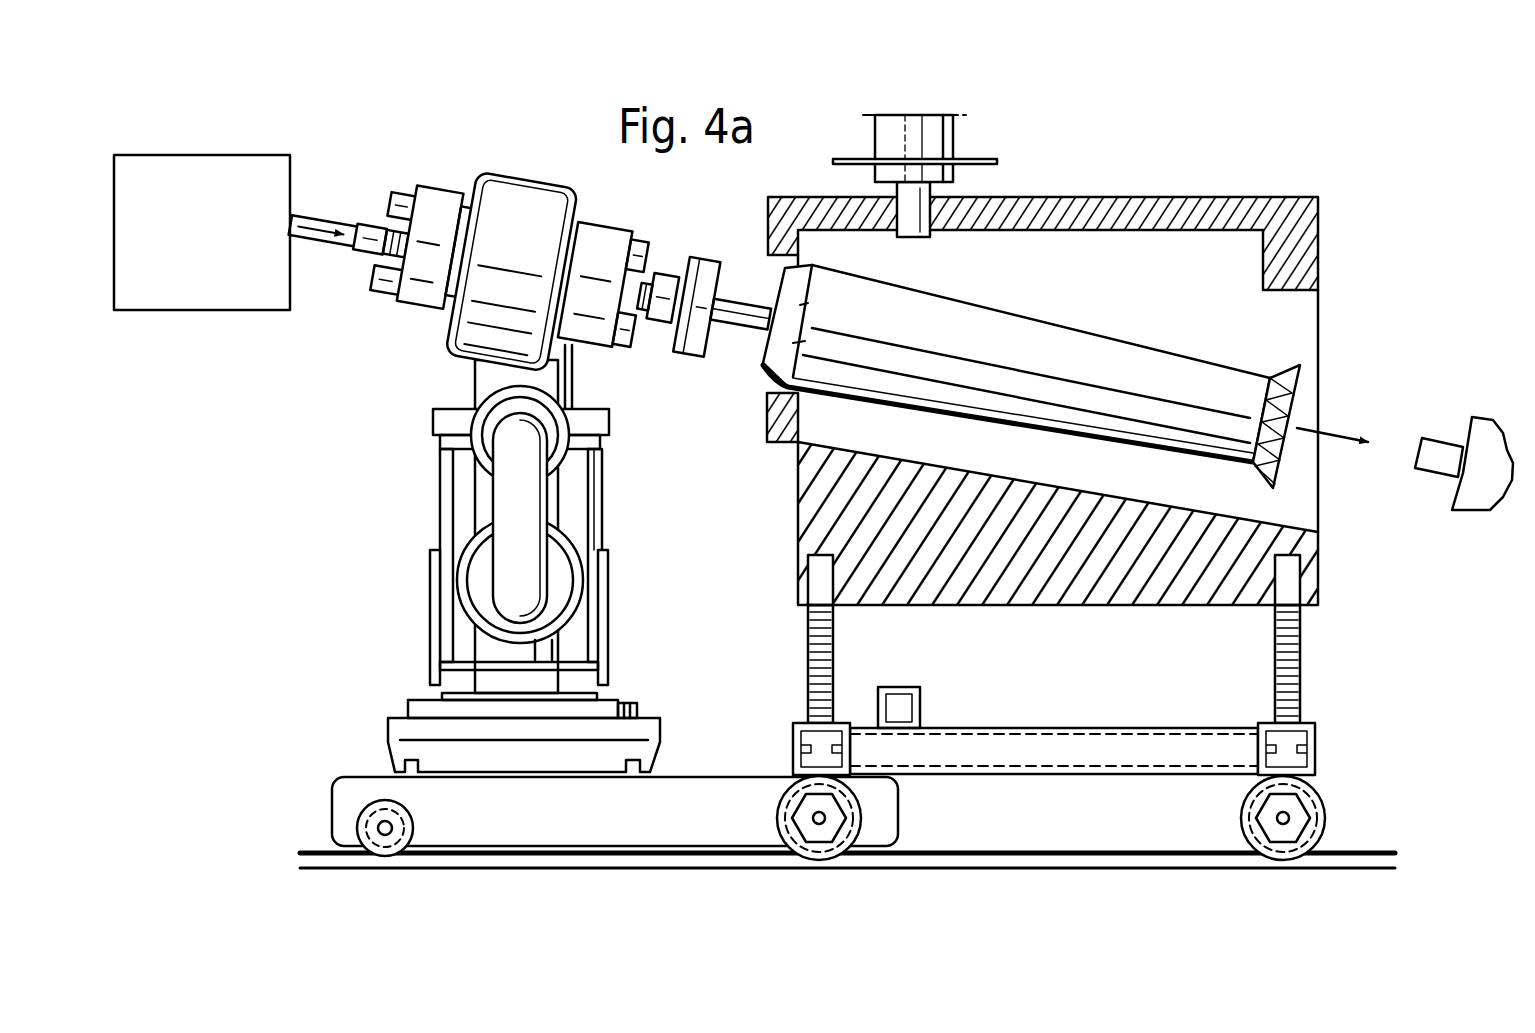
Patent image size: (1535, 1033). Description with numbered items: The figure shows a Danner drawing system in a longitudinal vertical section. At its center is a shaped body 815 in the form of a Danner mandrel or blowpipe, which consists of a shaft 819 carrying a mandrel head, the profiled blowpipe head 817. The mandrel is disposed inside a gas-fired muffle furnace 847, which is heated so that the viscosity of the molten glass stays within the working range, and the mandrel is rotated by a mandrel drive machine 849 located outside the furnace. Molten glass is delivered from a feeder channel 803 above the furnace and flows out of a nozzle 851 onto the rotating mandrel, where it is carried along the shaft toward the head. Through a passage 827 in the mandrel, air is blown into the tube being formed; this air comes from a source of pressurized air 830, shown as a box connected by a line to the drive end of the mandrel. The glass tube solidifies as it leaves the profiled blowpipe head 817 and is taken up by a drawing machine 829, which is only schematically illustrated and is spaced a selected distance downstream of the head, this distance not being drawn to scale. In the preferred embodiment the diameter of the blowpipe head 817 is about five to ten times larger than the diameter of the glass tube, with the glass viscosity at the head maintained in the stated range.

The source of pressurized air 830 is at (268, 155).
The feeder channel 803 is at (945, 143).
The gas-fired muffle furnace 847 is at (1155, 243).
The nozzle 851 is at (922, 232).
The mandrel drive machine 849 is at (448, 353).
The shaped body 815 is at (1057, 322).
The shaft 819 is at (1162, 373).
The profiled blowpipe head 817 is at (1290, 397).
The passage 827 is at (1327, 442).
The drawing machine 829 is at (1492, 418).